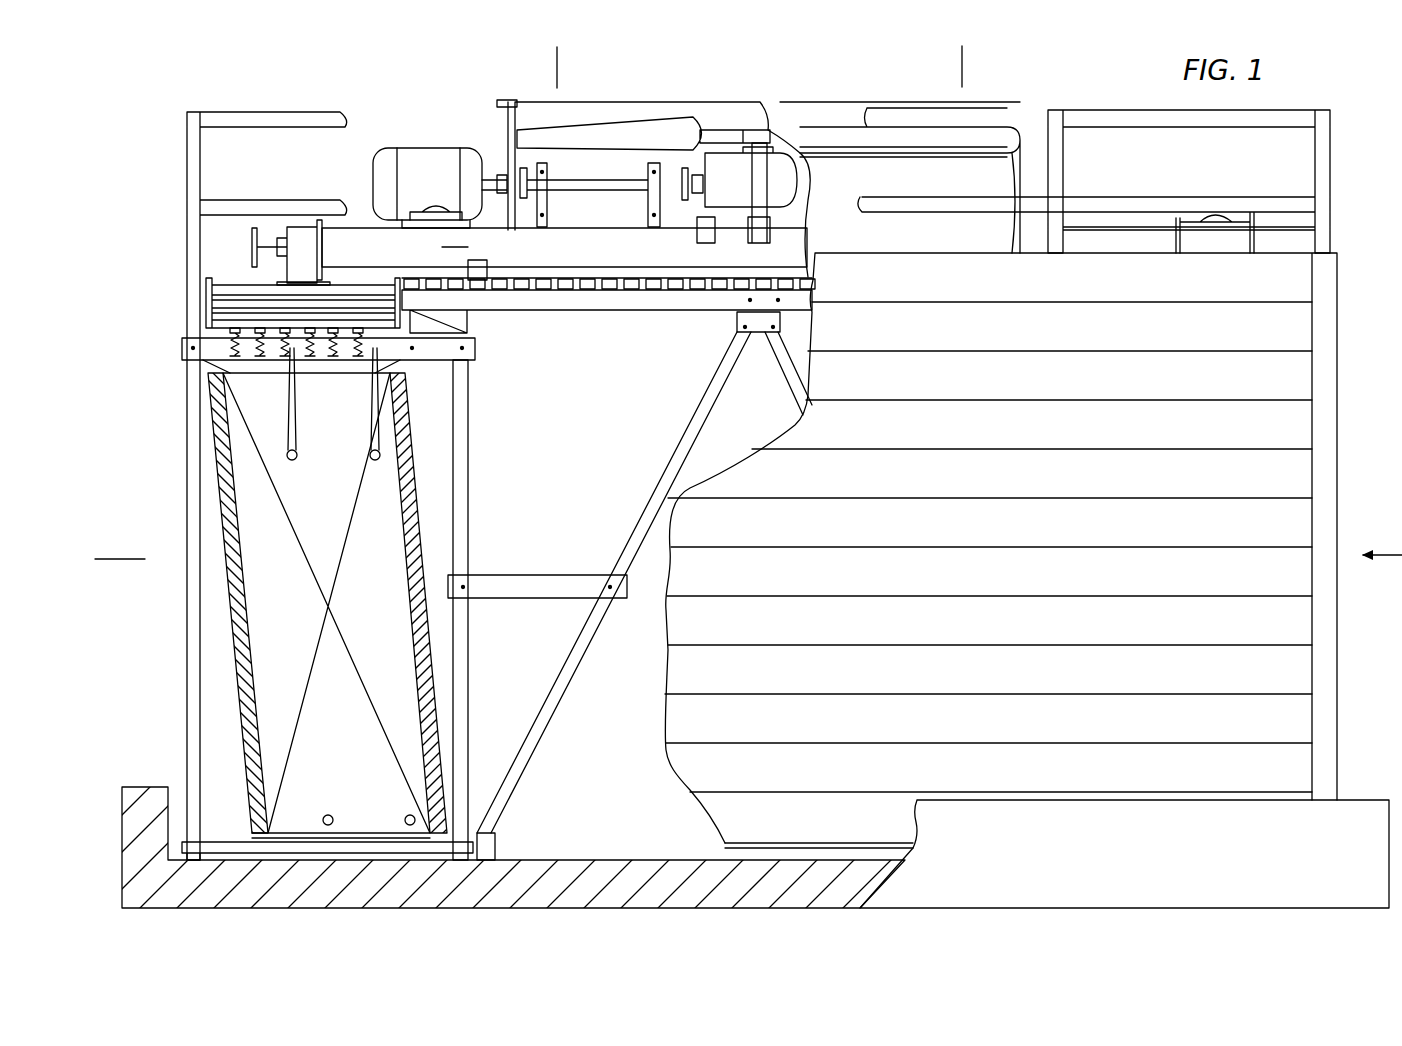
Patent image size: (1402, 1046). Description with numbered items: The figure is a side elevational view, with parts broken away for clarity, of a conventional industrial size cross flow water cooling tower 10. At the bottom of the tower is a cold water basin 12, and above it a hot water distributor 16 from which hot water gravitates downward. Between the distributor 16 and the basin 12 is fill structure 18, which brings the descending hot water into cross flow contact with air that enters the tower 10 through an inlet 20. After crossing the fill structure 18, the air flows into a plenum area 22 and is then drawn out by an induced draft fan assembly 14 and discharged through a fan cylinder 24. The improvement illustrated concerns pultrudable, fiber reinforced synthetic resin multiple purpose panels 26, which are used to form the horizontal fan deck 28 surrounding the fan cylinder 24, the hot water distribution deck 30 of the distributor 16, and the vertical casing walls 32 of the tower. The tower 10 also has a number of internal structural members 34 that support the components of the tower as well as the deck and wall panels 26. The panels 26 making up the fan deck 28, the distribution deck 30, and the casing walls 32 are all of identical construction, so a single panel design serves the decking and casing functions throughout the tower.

The cross flow water cooling tower 10 is at (178, 420).
The cold water basin 12 is at (540, 860).
The induced draft fan assembly 14 is at (712, 127).
The hot water distributor 16 is at (233, 278).
The fill structure 18 is at (430, 488).
The inlet 20 is at (222, 713).
The plenum area 22 is at (576, 485).
The fan cylinder 24 is at (512, 123).
The multiple purpose panels 26 is at (623, 277).
The fan deck 28 is at (548, 270).
The hot water distribution deck 30 is at (323, 323).
The casing walls 32 is at (1304, 381).
The internal structural members 34 is at (697, 415).